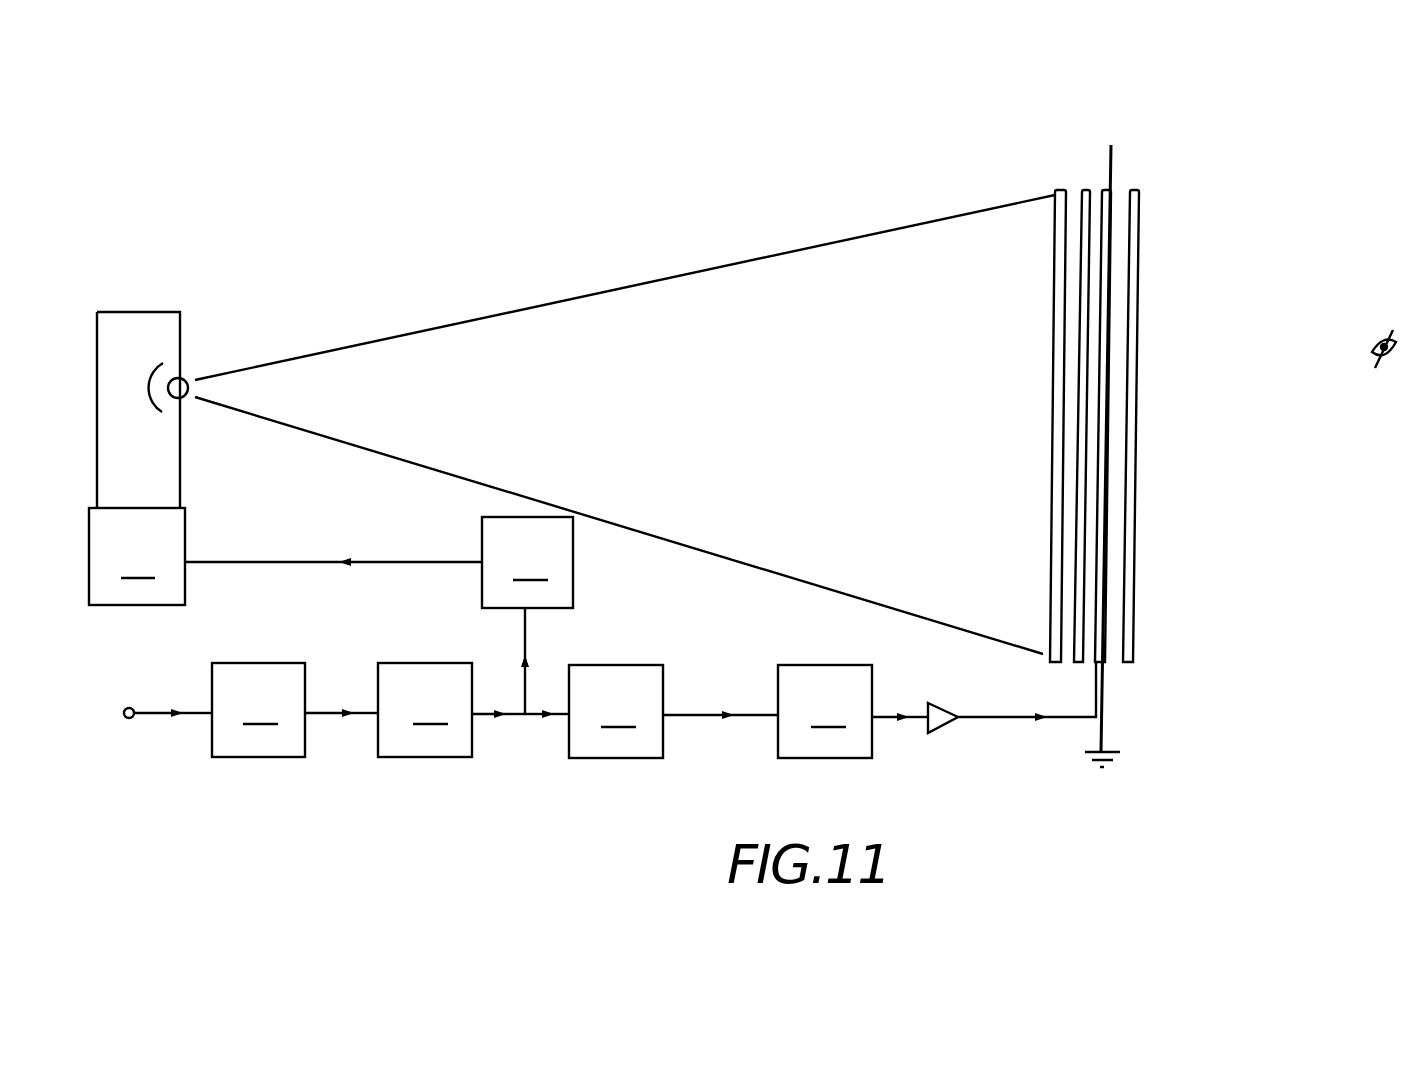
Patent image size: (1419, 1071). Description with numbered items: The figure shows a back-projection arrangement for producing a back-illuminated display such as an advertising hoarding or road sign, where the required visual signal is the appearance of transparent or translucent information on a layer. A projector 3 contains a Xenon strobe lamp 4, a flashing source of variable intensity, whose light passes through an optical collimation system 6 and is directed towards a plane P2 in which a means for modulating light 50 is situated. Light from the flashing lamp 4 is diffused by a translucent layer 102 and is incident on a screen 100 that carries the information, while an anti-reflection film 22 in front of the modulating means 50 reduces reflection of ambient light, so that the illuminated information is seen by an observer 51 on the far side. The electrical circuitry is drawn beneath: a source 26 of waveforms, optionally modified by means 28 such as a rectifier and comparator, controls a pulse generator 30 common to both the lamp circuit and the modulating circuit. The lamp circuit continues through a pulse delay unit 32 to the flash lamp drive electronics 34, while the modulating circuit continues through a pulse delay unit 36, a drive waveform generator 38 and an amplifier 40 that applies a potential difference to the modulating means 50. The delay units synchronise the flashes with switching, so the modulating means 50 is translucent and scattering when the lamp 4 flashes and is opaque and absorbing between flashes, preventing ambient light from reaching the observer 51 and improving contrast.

The projector 3 is at (188, 261).
The Xenon strobe lamp 4 is at (184, 397).
The optical collimation system 6 is at (170, 350).
The anti-reflection film 22 is at (1135, 190).
The source 26 is at (160, 731).
The means for modifying waveforms 28 is at (258, 710).
The pulse generator 30 is at (425, 710).
The pulse delay unit 32 is at (527, 562).
The flash lamp drive electronics 34 is at (137, 556).
The pulse delay unit 36 is at (616, 711).
The drive waveform generator 38 is at (825, 711).
The amplifier 40 is at (943, 736).
The means for modulating light 50 is at (1107, 188).
The observer 51 is at (1389, 326).
The screen 100 is at (1083, 662).
The translucent layer 102 is at (1057, 190).
The plane P2 is at (1107, 440).